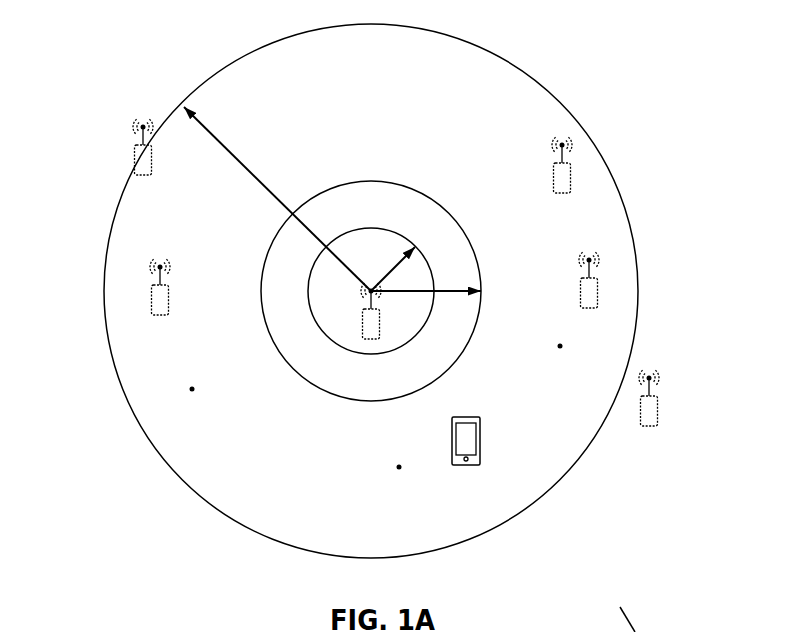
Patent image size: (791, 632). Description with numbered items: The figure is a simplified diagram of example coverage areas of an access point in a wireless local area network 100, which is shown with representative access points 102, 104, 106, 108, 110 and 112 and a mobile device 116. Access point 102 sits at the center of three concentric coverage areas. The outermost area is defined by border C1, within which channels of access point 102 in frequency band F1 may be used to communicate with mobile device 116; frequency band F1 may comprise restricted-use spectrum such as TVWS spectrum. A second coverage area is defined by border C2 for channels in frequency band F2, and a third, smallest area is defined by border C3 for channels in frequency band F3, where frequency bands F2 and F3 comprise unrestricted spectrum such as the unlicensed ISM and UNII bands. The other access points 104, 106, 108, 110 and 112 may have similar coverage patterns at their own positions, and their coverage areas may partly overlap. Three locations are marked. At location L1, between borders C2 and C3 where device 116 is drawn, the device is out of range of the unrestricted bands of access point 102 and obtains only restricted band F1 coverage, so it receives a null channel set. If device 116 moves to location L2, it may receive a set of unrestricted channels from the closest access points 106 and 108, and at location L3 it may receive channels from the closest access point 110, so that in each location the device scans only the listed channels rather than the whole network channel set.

The network 100 is at (580, 100).
The access point 102 is at (372, 327).
The access point 104 is at (562, 182).
The access point 106 is at (590, 300).
The access point 108 is at (648, 415).
The access point 110 is at (153, 310).
The access point 112 is at (137, 162).
The mobile device 116 is at (458, 465).
The border C1 is at (545, 497).
The border C2 is at (290, 365).
The border C3 is at (308, 303).
The frequency band F1 is at (257, 178).
The frequency band F2 is at (448, 287).
The frequency band F3 is at (385, 272).
The location L1 is at (399, 465).
The location L2 is at (560, 344).
The location L3 is at (191, 387).